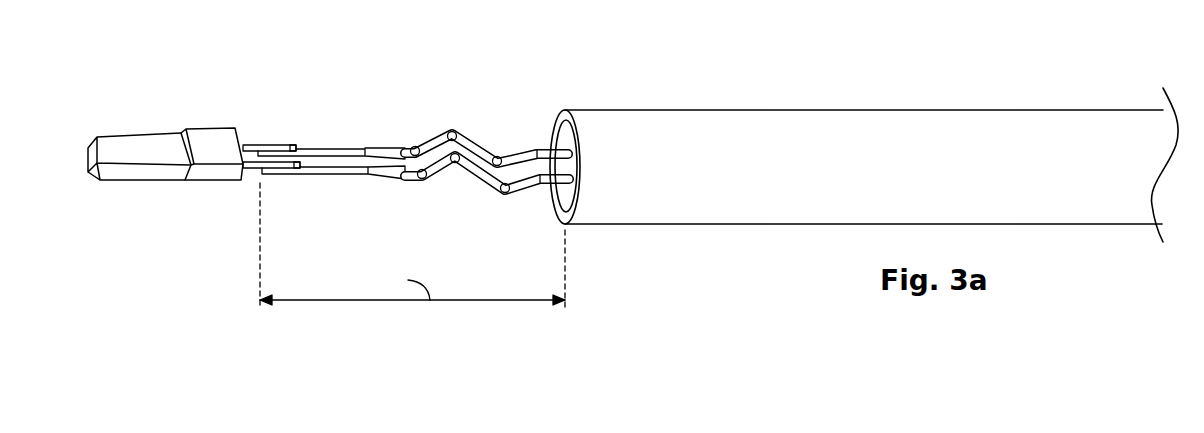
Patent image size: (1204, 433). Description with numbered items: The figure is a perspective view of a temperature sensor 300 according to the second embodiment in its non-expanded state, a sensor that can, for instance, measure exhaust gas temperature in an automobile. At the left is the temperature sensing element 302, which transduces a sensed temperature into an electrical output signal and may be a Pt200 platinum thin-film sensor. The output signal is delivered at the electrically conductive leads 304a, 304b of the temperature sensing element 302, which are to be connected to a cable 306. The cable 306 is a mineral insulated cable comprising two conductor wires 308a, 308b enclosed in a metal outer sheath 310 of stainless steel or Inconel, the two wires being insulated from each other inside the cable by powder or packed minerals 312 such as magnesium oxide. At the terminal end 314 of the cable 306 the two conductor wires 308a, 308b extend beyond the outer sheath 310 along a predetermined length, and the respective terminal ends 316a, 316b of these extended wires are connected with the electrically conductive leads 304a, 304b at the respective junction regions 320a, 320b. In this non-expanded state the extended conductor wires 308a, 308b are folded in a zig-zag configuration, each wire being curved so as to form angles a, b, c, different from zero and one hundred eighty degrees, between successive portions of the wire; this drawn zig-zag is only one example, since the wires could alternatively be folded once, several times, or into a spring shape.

The temperature sensor 300 is at (157, 42).
The temperature sensing element 302 is at (135, 152).
The electrically conductive lead 304a is at (244, 183).
The electrically conductive lead 304b is at (253, 147).
The terminal end 316a is at (286, 172).
The terminal end 316b is at (281, 147).
The junction region 320a is at (322, 178).
The junction region 320b is at (295, 147).
The conductor wire 308a is at (470, 190).
The conductor wire 308b is at (473, 145).
The angle a is at (412, 143).
The angle b is at (452, 136).
The angle c is at (499, 160).
The terminal end of the cable 314 is at (555, 142).
The packed minerals 312 is at (553, 208).
The outer sheath 310 is at (652, 122).
The cable 306 is at (942, 123).